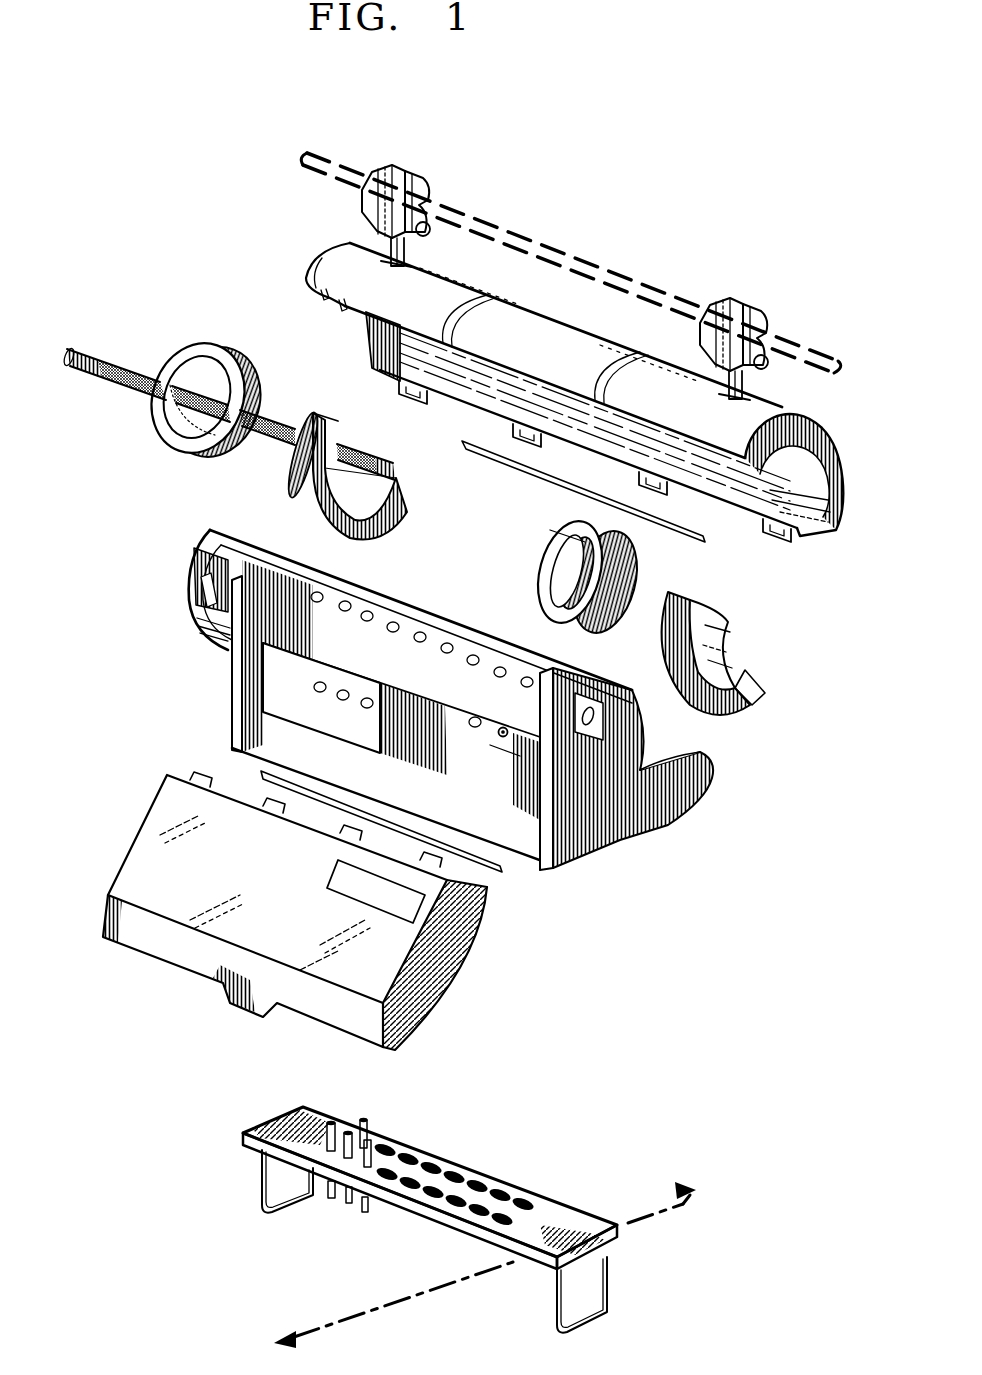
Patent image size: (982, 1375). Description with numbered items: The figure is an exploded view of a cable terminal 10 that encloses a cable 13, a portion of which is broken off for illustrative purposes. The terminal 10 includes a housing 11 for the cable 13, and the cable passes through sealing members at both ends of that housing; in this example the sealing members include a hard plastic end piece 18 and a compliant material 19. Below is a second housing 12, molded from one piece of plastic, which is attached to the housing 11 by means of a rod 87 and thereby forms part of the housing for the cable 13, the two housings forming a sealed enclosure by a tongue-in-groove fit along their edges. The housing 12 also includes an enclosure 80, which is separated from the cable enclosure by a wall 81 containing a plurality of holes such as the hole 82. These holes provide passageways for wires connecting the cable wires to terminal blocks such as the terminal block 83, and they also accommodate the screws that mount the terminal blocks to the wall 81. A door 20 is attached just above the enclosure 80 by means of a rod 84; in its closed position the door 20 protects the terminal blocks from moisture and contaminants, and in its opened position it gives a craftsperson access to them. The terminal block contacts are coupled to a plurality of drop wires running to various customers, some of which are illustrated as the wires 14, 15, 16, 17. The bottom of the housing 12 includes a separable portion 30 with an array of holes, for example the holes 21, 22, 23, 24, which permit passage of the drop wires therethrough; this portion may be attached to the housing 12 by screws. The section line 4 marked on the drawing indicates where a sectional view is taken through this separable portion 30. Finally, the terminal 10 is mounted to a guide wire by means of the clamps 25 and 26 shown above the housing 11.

The terminal 10 is at (590, 218).
The housing 11 is at (592, 365).
The housing 12 is at (431, 700).
The cable 13 is at (262, 407).
The drop wire 14 is at (328, 1197).
The drop wire 15 is at (346, 1210).
The drop wire 16 is at (368, 1118).
The drop wire 17 is at (364, 1218).
The hard plastic end piece 18 is at (760, 673).
The compliant material 19 is at (548, 552).
The door 20 is at (147, 857).
The hole 21 is at (292, 1118).
The hole 22 is at (328, 1113).
The hole 23 is at (378, 1157).
The hole 24 is at (373, 1150).
The clamp 25 is at (400, 167).
The clamp 26 is at (745, 300).
The separable portion 30 is at (467, 1191).
The enclosure 80 is at (513, 763).
The wall 81 is at (458, 670).
The hole 82 is at (503, 740).
The terminal block 83 is at (365, 747).
The rod 84 is at (500, 868).
The rod 87 is at (480, 453).
The section line 4- 4 is at (476, 1254).